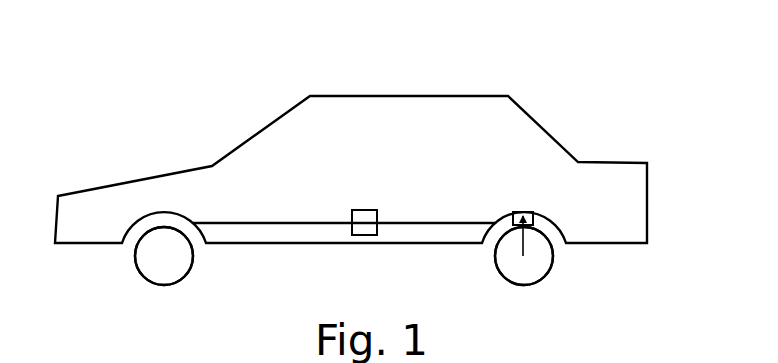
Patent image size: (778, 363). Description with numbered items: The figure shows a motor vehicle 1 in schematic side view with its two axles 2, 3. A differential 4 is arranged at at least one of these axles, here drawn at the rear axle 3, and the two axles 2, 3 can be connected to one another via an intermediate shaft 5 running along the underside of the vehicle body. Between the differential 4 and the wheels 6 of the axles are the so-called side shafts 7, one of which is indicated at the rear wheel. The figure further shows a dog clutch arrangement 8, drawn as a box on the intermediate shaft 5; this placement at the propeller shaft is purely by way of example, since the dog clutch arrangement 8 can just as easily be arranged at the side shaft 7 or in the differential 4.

The motor vehicle 1 is at (176, 124).
The axle 2 is at (141, 283).
The axle 3 is at (497, 286).
The differential 4 is at (531, 211).
The intermediate shaft 5 is at (276, 222).
The wheels 6 is at (187, 272).
The side shaft 7 is at (527, 241).
The dog clutch arrangement 8 is at (366, 206).